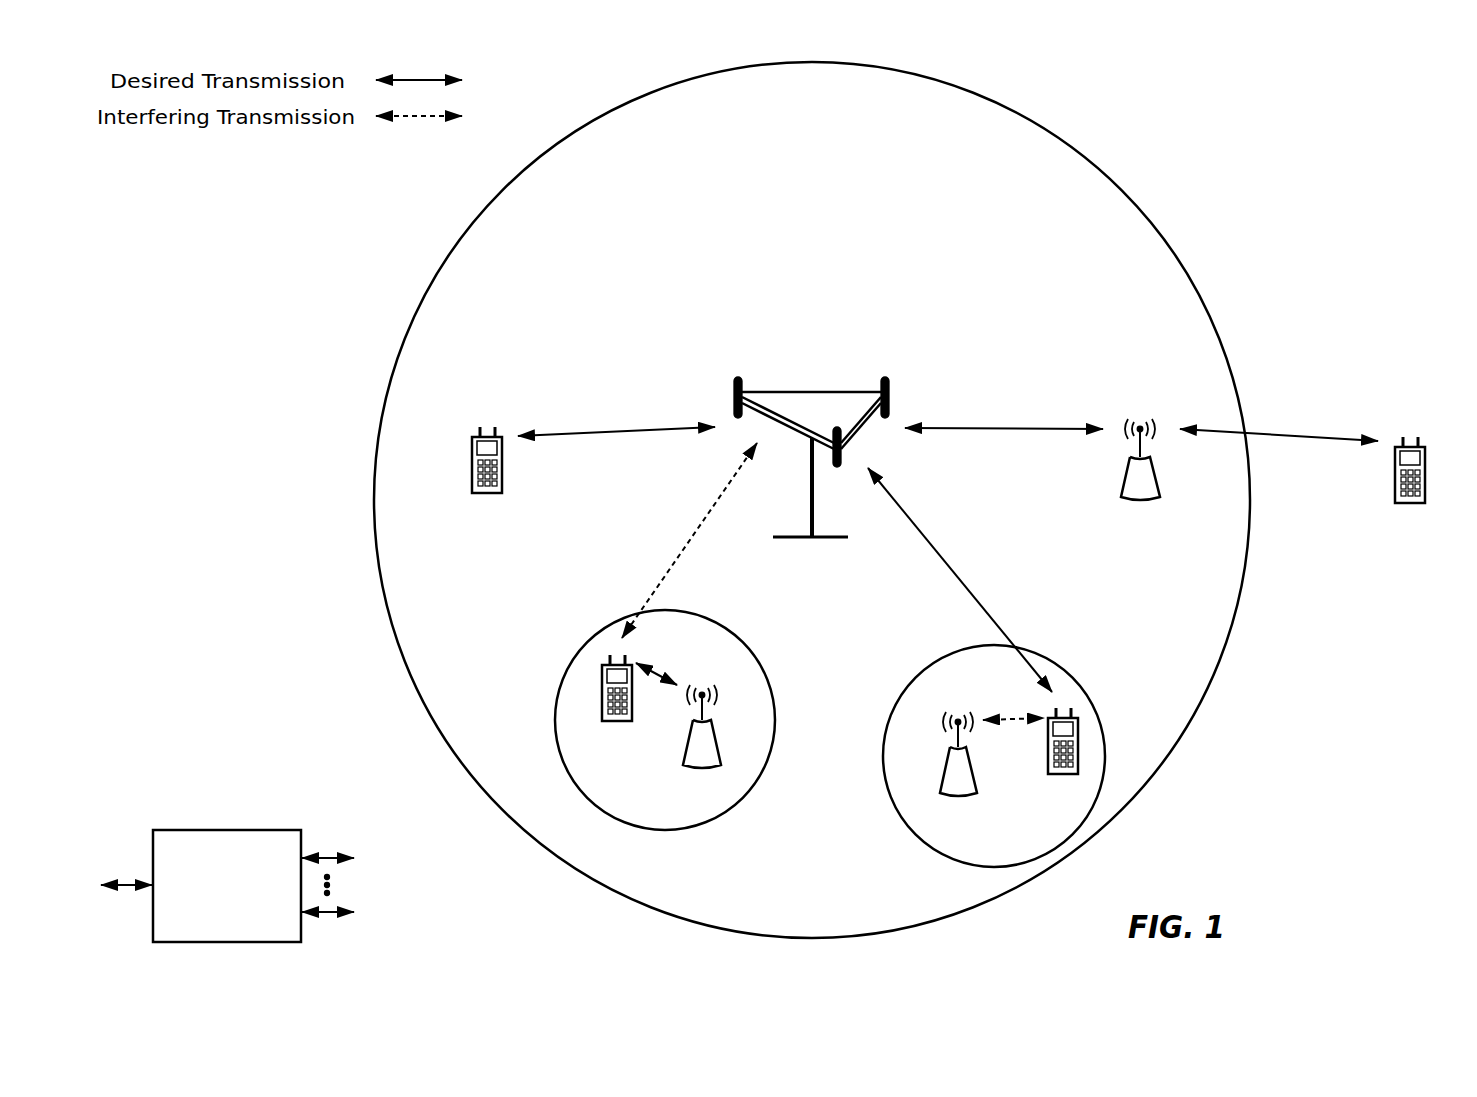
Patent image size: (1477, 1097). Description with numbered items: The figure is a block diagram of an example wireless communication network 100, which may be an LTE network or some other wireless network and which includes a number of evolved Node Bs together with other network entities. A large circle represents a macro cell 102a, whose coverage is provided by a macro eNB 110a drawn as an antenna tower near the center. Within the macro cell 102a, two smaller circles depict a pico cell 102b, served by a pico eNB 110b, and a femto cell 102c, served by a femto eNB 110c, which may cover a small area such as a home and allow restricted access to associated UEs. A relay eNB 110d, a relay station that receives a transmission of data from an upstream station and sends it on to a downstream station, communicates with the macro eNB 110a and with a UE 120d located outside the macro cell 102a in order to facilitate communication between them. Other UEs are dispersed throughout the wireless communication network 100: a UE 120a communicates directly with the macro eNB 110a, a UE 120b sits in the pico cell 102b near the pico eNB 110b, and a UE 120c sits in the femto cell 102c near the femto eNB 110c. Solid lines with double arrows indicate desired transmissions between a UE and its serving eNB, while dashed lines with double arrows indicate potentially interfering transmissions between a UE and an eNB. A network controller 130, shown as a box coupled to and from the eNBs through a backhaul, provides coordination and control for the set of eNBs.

The wireless communication network 100 is at (1332, 130).
The macro cell 102a is at (1106, 172).
The pico cell 102b is at (762, 632).
The femto cell 102c is at (912, 683).
The macro eNB 110a is at (808, 390).
The pico eNB 110b is at (732, 740).
The femto eNB 110c is at (942, 778).
The relay eNB 110d is at (1141, 425).
The UE 120a is at (473, 447).
The UE 120b is at (602, 716).
The UE 120c is at (1049, 770).
The UE 120d is at (1427, 457).
The network controller 130 is at (222, 829).